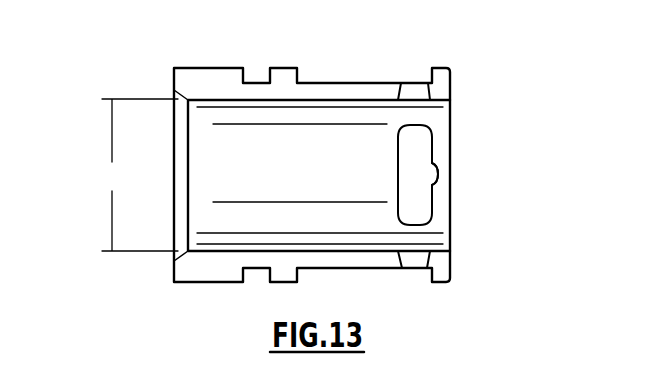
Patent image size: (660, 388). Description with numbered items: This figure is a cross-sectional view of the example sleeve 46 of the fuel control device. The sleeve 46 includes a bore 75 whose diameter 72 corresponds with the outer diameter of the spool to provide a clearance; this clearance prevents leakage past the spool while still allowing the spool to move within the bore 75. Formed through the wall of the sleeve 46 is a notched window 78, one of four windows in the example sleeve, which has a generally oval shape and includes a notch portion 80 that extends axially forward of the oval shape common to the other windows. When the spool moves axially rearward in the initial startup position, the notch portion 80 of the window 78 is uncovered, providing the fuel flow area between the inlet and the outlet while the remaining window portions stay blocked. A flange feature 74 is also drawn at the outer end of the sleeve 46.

The sleeve 46 is at (560, 110).
The bore diameter 72 is at (139, 175).
The flange 74 is at (462, 82).
The bore 75 is at (247, 216).
The notched window 78 is at (402, 127).
The notch portion 80 is at (446, 183).